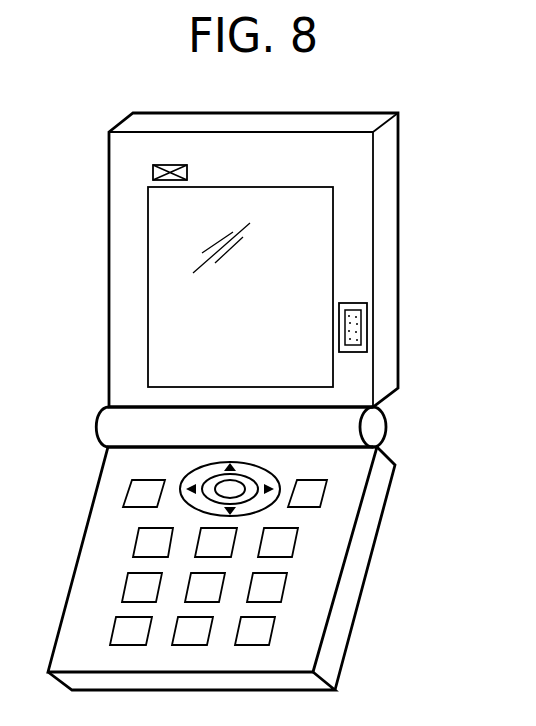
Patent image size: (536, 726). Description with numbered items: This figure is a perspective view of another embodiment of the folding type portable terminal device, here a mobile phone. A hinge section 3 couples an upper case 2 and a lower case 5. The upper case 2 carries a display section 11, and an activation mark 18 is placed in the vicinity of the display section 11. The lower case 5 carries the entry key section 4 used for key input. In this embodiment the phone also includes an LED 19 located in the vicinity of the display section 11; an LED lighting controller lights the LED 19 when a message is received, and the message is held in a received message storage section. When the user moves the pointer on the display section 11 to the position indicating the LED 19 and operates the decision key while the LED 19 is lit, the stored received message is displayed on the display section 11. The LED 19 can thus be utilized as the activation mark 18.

The upper case 2 is at (355, 195).
The hinge section 3 is at (378, 428).
The entry key section 4 is at (284, 585).
The lower case 5 is at (370, 515).
The display section 11 is at (318, 252).
The activation mark 18 is at (153, 170).
The LED 19 is at (357, 325).